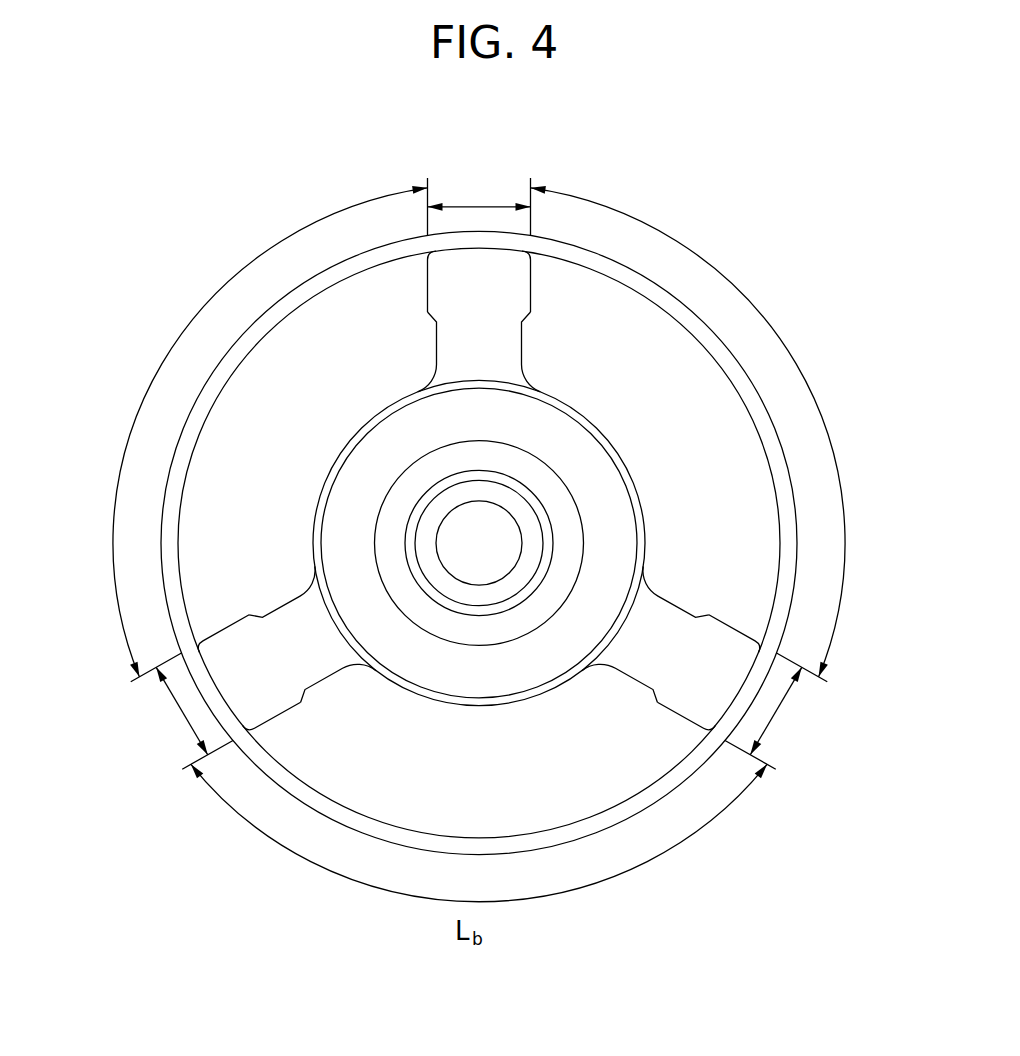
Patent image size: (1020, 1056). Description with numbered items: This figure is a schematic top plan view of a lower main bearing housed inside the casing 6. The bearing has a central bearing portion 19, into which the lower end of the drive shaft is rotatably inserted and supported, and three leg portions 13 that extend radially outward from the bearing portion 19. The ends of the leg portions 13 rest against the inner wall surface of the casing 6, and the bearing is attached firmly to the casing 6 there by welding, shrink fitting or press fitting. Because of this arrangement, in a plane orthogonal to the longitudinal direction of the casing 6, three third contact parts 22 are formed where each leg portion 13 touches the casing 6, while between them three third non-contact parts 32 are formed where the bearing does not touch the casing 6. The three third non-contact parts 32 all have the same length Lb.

The casing 6 is at (226, 388).
The leg portion 13 is at (450, 350).
The bearing portion 19 is at (519, 521).
The third contact part 22 is at (481, 205).
The third non-contact part 32 is at (162, 368).